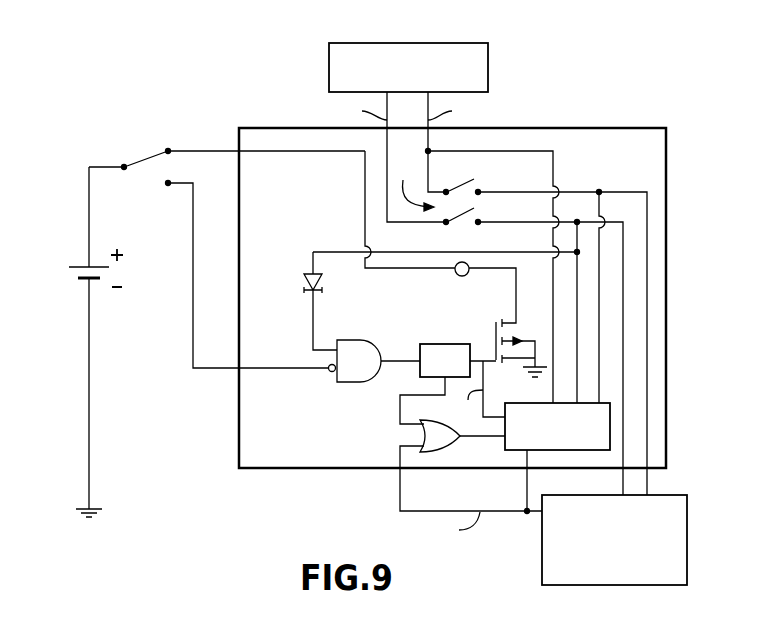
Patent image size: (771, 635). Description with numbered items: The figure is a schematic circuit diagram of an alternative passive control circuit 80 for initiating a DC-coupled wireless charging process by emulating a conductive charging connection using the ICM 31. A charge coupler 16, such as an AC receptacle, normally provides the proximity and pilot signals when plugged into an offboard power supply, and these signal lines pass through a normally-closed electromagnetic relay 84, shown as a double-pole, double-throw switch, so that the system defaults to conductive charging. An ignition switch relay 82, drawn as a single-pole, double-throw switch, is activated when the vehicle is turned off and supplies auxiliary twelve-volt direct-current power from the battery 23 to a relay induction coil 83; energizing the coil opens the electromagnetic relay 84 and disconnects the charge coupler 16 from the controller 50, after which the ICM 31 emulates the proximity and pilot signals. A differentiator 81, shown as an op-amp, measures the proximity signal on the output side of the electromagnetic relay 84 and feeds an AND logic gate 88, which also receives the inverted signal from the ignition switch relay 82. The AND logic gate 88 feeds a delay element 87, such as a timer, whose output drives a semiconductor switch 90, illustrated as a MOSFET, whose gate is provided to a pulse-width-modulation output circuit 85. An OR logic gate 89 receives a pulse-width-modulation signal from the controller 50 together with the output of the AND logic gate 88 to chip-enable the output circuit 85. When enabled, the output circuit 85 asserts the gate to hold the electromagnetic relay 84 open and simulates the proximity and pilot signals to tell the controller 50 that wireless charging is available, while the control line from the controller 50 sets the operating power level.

The control circuit 80 is at (592, 65).
The ignition switch relay 82 is at (143, 150).
The battery 23 is at (80, 267).
The charge coupler 16 is at (408, 55).
The ICM 31 is at (666, 168).
The electromagnetic relay 84 is at (472, 183).
The relay induction coil 83 is at (462, 277).
The semiconductor switch 90 is at (532, 325).
The differentiator 81 is at (294, 287).
The delay element 87 is at (445, 344).
The AND logic gate 88 is at (375, 361).
The OR logic gate 89 is at (471, 465).
The PWM output circuit 85 is at (557, 458).
The controller 50 is at (614, 540).